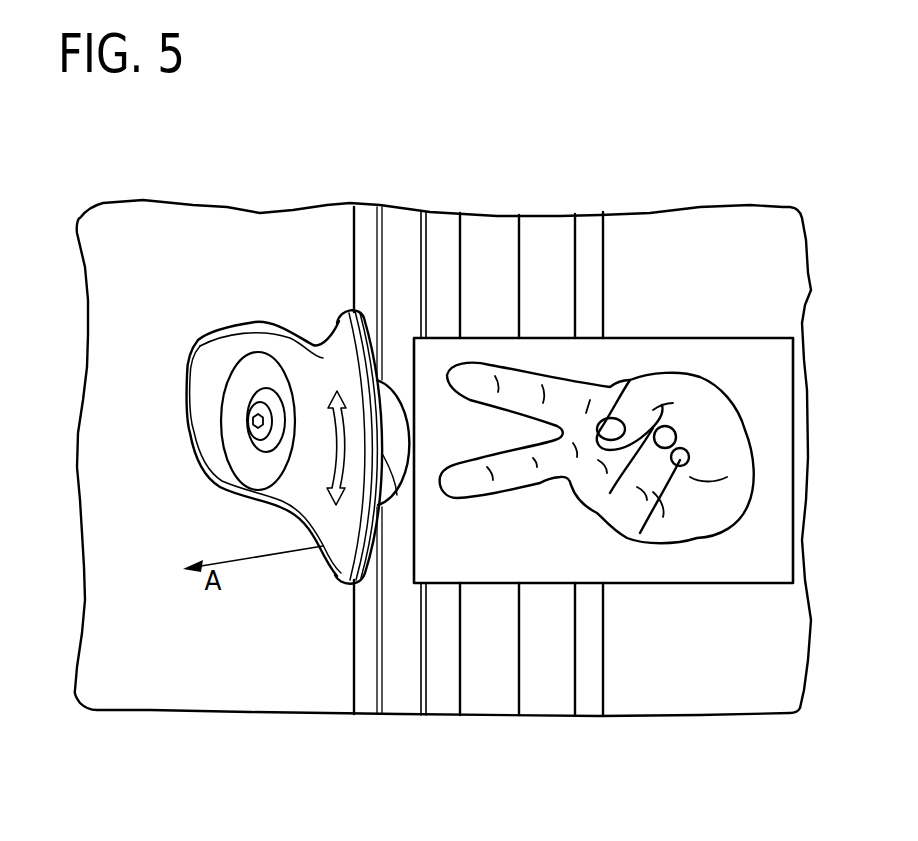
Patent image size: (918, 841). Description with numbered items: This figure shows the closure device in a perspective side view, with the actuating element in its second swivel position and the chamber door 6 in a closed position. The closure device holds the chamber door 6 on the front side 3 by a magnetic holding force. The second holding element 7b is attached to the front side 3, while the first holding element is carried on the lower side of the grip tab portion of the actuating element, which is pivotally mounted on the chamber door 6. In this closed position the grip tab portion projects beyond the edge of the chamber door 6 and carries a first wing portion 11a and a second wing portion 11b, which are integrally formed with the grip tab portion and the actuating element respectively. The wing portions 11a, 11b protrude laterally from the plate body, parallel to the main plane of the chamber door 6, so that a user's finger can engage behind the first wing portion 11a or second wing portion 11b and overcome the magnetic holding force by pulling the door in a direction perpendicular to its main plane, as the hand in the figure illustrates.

The chamber door 6 is at (198, 240).
The front side 3 is at (448, 240).
The first wing portion 11a is at (280, 352).
The second wing portion 11b is at (350, 581).
The second holding element 7b is at (408, 482).